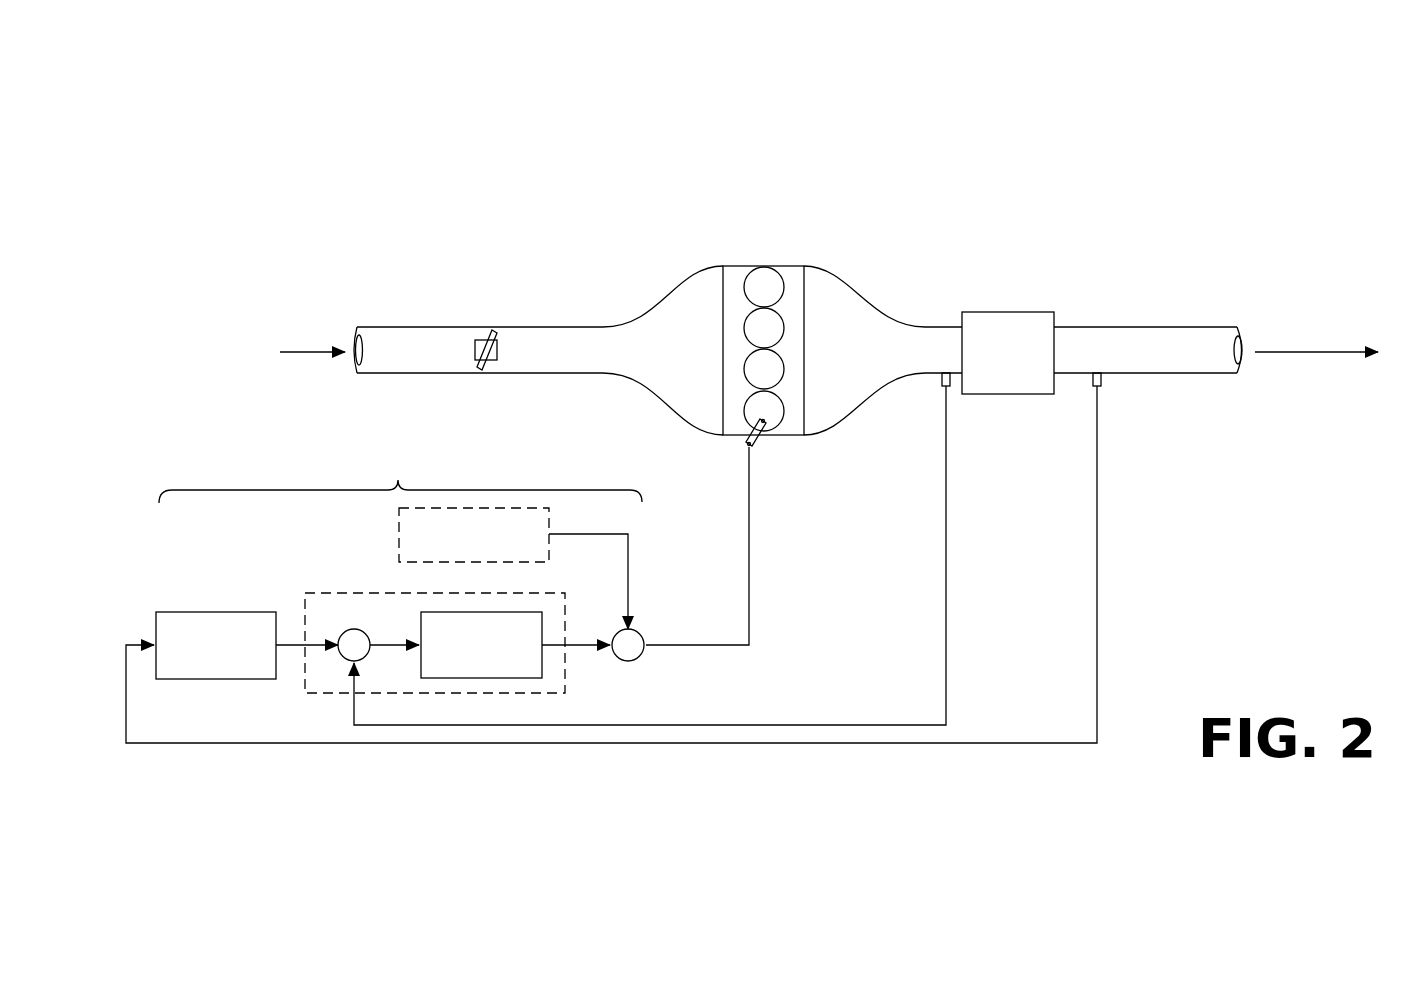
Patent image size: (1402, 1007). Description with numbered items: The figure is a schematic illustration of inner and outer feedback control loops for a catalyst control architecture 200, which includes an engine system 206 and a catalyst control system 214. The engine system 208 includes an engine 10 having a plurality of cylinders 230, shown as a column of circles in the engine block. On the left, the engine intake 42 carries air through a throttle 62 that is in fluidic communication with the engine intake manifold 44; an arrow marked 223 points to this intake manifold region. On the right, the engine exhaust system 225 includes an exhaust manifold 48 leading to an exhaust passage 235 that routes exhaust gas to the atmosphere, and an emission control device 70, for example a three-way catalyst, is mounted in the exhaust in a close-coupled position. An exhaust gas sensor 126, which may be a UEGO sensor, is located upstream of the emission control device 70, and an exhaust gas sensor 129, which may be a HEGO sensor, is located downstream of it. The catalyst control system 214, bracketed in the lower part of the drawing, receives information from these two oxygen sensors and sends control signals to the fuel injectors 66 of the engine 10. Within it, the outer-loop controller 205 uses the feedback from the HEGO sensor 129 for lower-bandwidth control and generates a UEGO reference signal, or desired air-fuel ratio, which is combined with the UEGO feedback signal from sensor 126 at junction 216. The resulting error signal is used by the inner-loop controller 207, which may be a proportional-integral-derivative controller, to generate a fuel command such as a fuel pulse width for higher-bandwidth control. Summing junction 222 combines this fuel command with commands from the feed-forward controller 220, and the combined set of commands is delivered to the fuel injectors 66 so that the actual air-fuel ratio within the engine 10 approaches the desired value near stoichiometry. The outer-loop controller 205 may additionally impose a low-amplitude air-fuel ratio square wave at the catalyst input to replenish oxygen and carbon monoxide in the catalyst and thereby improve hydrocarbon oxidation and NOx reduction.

The catalyst control architecture 200 is at (244, 140).
The engine system 206 is at (313, 263).
The engine system 208 is at (826, 240).
The engine intake 42 is at (418, 375).
The throttle 62 is at (497, 355).
The engine intake manifold 44 is at (663, 350).
The intake manifold 223 is at (659, 289).
The engine 10 is at (805, 336).
The cylinder 230 is at (762, 270).
The exhaust manifold 48 is at (883, 350).
The exhaust system 225 is at (885, 291).
The emission control device 70 is at (998, 312).
The exhaust passage 235 is at (1200, 327).
The exhaust gas sensor 126 is at (946, 384).
The exhaust gas sensor 129 is at (1097, 384).
The fuel injectors 66 is at (758, 441).
The catalyst control system 214 is at (400, 469).
The feed-forward controller 220 is at (513, 568).
The outer-loop controller 205 is at (247, 645).
The junction 216 is at (358, 630).
The inner-loop controller 207 is at (515, 645).
The summing junction 222 is at (630, 661).